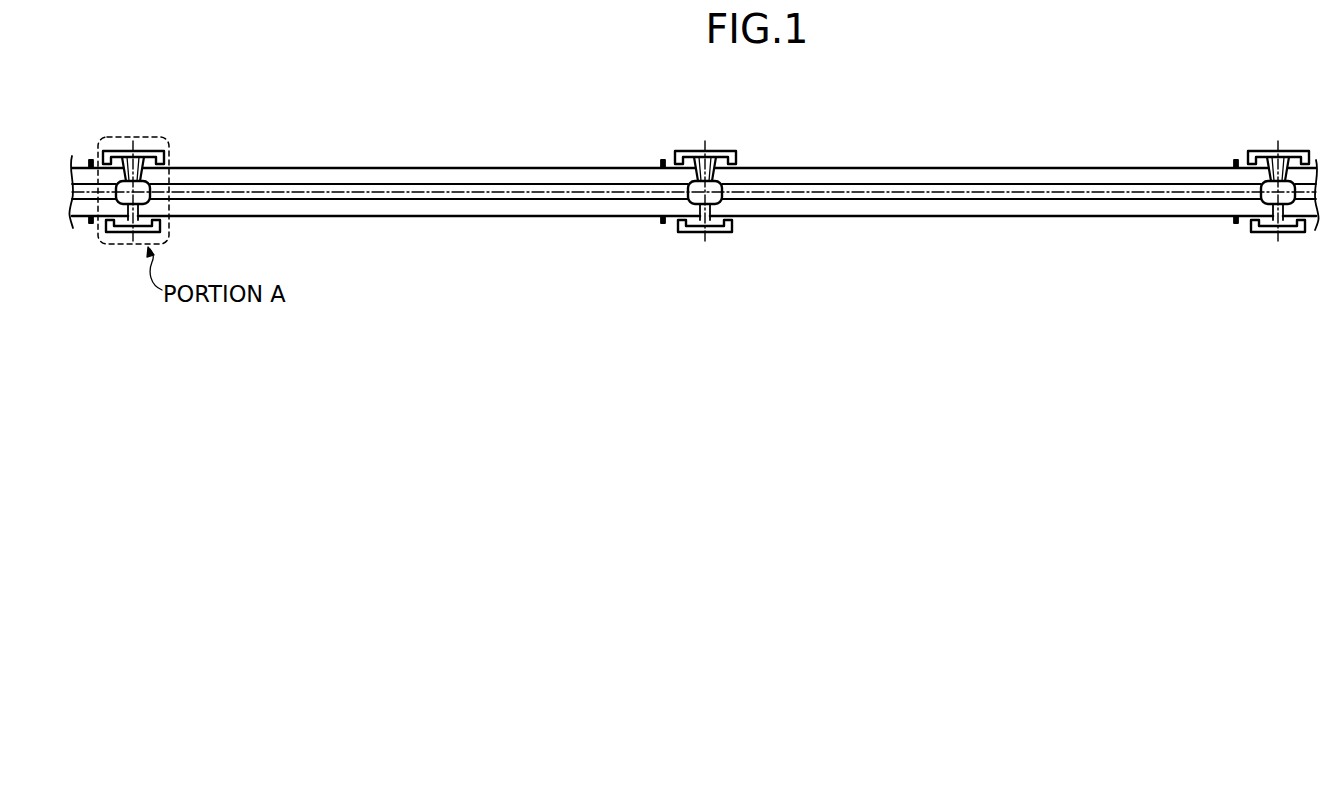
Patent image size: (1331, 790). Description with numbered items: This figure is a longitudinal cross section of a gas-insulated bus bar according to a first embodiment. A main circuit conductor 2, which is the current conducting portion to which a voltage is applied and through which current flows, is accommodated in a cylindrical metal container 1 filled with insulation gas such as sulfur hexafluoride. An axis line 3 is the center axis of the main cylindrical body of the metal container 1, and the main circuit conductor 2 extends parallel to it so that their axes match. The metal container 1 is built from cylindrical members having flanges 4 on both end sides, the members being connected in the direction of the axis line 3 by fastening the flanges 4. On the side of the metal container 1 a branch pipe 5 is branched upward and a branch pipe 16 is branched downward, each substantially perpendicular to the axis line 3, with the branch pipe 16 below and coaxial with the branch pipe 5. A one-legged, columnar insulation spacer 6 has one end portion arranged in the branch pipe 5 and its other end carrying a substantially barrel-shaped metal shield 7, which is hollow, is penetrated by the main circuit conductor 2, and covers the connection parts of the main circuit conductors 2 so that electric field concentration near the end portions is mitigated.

The metal container 1 is at (461, 168).
The main circuit conductor 2 is at (382, 184).
The axis line 3 is at (572, 190).
The flange 4 is at (90, 160).
The branch pipe 5 is at (166, 163).
The insulation spacer 6 is at (140, 163).
The shield 7 is at (127, 200).
The branch pipe 16 is at (156, 222).